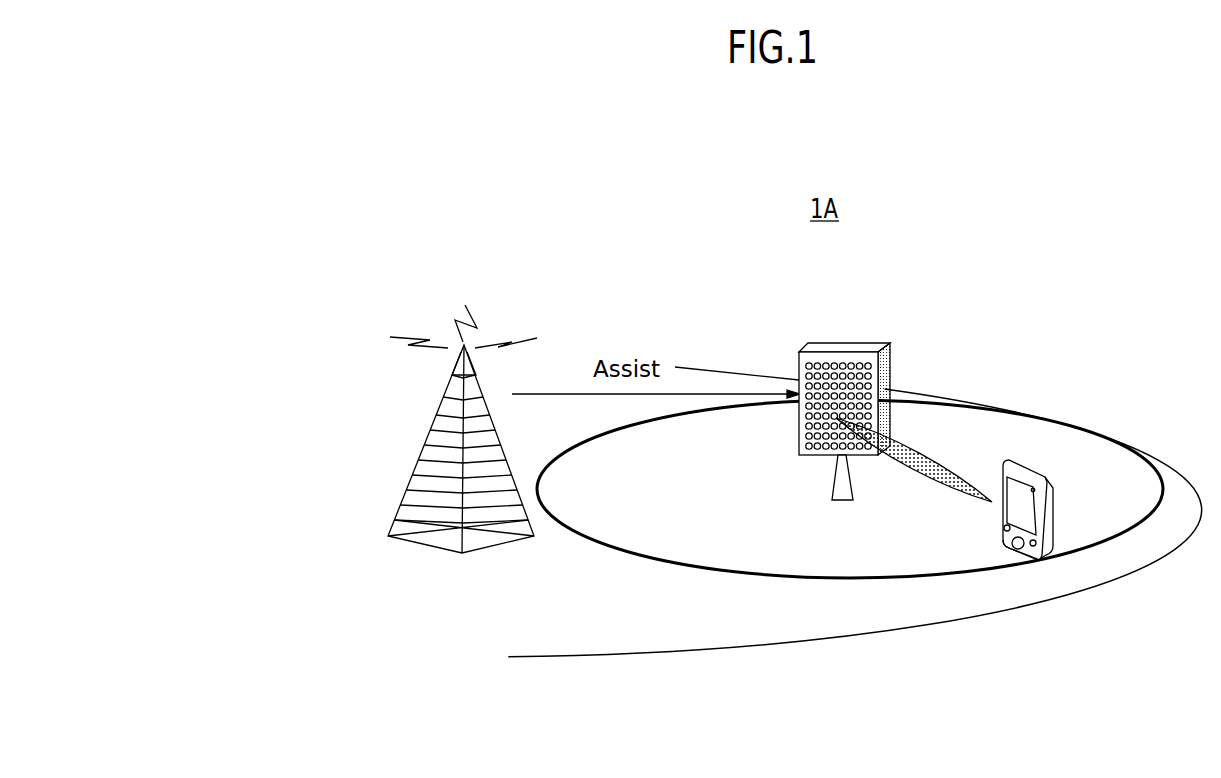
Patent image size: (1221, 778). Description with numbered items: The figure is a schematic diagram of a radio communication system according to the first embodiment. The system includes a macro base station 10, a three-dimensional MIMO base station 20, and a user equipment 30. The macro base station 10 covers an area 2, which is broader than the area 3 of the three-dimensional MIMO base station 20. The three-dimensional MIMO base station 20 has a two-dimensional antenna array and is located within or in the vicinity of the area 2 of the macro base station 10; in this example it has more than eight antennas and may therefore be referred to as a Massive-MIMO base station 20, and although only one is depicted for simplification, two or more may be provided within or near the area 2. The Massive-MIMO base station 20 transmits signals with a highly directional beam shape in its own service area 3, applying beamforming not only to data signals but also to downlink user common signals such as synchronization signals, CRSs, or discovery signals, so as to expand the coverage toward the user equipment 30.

The area 2 is at (1003, 610).
The area 3 is at (832, 583).
The macro base station 10 is at (410, 484).
The 3D-MIMO base station 20 is at (838, 343).
The user equipment 30 is at (1037, 464).